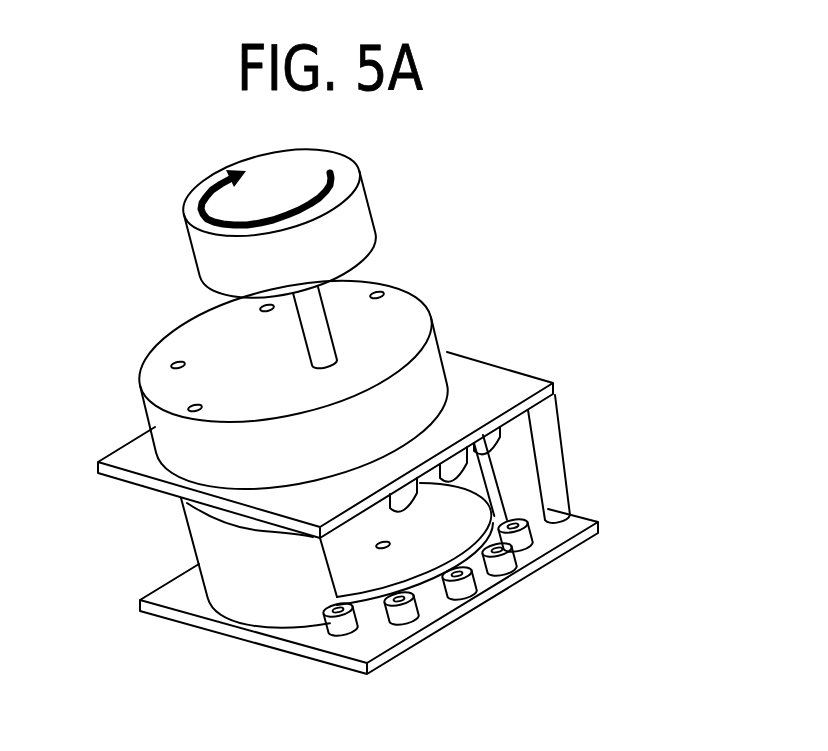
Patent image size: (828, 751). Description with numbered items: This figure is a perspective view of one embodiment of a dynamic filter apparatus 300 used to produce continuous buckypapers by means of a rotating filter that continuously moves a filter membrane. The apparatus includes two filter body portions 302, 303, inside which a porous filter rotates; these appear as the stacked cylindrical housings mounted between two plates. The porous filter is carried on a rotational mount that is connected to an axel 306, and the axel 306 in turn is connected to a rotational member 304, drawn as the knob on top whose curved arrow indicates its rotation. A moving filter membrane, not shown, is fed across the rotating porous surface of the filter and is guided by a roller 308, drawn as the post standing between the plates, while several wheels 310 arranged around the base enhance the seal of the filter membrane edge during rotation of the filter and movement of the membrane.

The dynamic filter apparatus 300 is at (540, 226).
The filter body portion 302 is at (430, 377).
The filter body portion 303 is at (247, 603).
The rotational member 304 is at (205, 253).
The axel 306 is at (318, 316).
The roller 308 is at (528, 453).
The wheels 310 is at (353, 625).